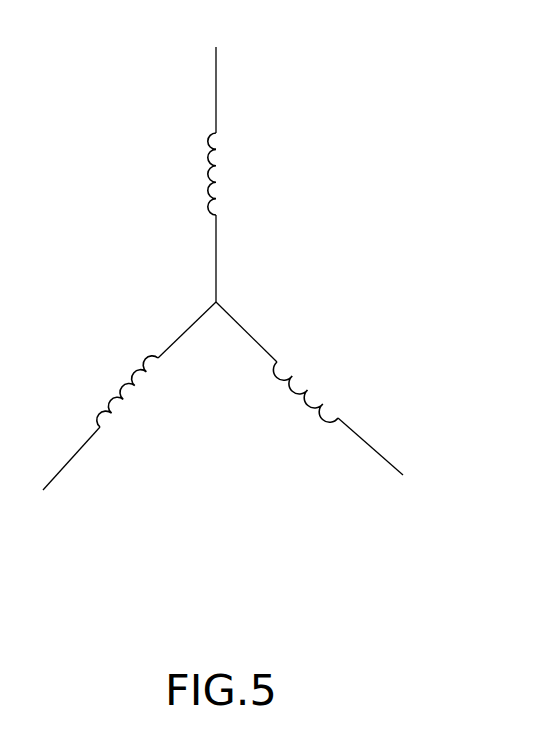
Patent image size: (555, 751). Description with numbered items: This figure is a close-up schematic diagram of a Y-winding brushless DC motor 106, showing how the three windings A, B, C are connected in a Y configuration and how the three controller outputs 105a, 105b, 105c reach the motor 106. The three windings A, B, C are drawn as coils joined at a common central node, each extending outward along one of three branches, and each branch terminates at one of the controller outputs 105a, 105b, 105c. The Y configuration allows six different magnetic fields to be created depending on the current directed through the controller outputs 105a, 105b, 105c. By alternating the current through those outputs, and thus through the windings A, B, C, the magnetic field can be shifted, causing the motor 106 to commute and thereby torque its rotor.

The controller output 105a is at (216, 75).
The controller output 105b is at (394, 464).
The controller output 105c is at (68, 462).
The brushless DC motor 106 is at (382, 110).
The Y-winding A is at (235, 174).
The Y-winding B is at (305, 388).
The Y-winding C is at (127, 391).